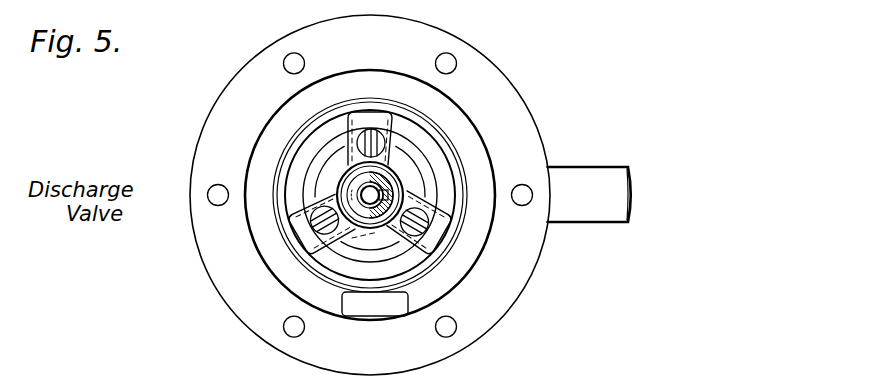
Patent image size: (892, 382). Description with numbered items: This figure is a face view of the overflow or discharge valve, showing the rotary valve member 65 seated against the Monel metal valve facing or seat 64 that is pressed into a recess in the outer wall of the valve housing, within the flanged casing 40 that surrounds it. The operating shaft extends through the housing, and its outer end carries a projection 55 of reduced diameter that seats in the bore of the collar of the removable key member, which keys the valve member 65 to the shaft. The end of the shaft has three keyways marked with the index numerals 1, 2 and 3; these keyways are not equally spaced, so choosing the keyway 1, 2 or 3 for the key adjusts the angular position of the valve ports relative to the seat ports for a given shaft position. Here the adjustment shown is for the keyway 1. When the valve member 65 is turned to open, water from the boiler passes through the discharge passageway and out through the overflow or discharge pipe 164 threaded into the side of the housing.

The discharge valve casing flange 40 is at (495, 84).
The overflow or discharge pipe 164 is at (582, 180).
The valve facing or seat 64 is at (315, 137).
The rotary valve member 65 is at (422, 163).
The projection of reduced diameter 55 is at (370, 165).
The keyway index numeral 1 is at (463, 167).
The keyway index numeral 2 is at (370, 194).
The keyway index numeral 3 is at (361, 299).